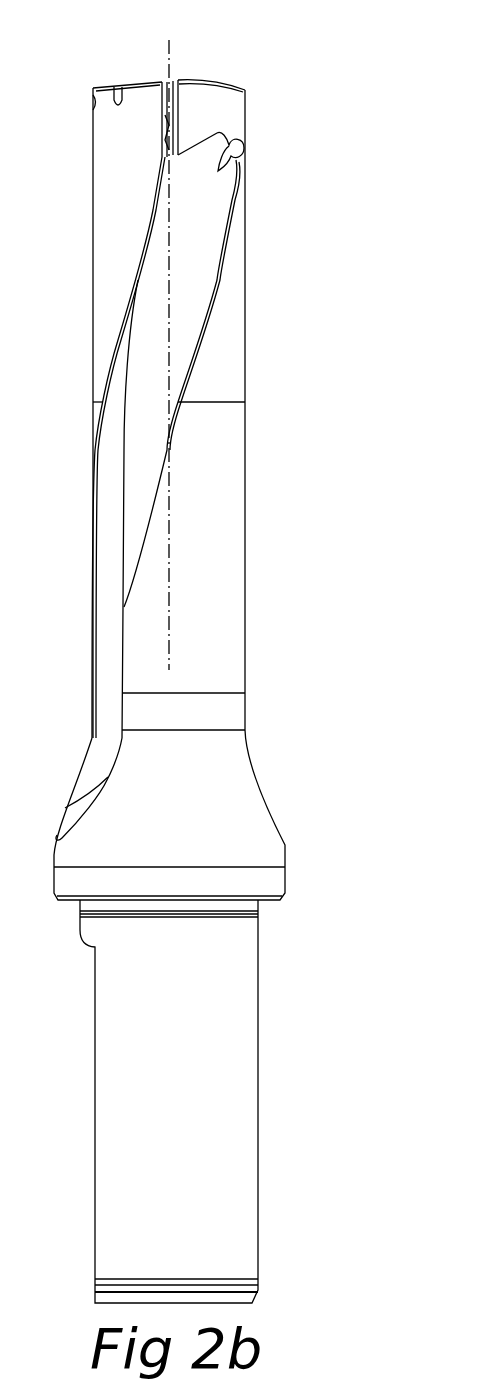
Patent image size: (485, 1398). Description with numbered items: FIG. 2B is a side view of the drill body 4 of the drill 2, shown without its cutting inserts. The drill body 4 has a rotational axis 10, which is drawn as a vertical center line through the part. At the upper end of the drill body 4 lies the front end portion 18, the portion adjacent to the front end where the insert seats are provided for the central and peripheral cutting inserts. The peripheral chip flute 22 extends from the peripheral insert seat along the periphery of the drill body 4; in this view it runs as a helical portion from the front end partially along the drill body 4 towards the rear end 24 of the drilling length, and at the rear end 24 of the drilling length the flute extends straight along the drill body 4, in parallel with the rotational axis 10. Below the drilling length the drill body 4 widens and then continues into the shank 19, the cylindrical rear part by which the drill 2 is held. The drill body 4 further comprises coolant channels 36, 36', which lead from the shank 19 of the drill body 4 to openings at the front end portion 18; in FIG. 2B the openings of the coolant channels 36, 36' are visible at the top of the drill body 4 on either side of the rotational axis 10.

The drill 2 is at (268, 66).
The rotational axis 10 is at (168, 60).
The drill body 4 is at (232, 622).
The front end portion 18 is at (294, 142).
The shank 19 is at (230, 1090).
The peripheral chip flute 22 is at (106, 533).
The rear end of the drilling length 24 is at (284, 710).
The coolant channel 36 is at (262, 131).
The coolant channel 36' is at (79, 81).